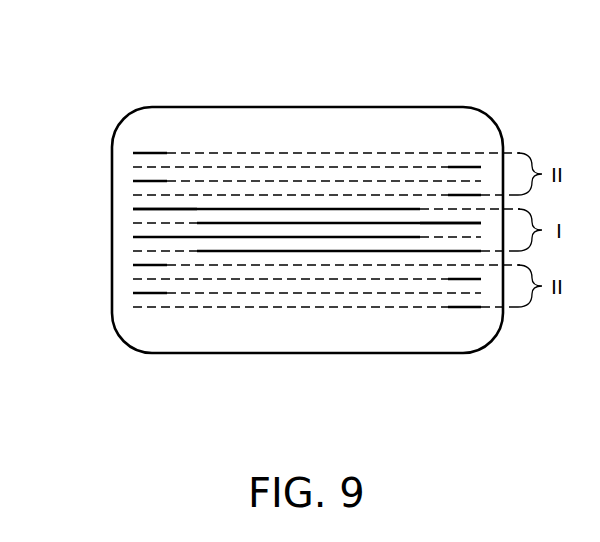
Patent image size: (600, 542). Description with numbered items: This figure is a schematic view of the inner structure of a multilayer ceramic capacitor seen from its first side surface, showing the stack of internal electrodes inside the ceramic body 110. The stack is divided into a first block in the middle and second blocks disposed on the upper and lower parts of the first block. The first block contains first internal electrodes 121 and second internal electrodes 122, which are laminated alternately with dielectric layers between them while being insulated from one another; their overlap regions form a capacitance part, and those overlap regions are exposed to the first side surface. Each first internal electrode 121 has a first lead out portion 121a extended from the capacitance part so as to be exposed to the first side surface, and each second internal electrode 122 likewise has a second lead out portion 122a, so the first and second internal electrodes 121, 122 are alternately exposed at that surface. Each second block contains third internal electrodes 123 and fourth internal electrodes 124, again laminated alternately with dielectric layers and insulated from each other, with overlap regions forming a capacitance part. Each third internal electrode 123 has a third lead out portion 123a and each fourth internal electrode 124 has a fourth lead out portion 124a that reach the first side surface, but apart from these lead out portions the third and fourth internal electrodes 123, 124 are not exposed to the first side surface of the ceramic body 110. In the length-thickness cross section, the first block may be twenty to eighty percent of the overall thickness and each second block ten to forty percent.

The ceramic body 110 is at (242, 107).
The first internal electrode 121 is at (277, 209).
The first lead out portion 121a is at (148, 209).
The second internal electrode 122 is at (347, 223).
The second lead out portion 122a is at (447, 223).
The third internal electrode 123 is at (284, 153).
The third lead out portion 123a is at (151, 153).
The fourth internal electrode 124 is at (360, 167).
The fourth lead out portion 124a is at (465, 167).